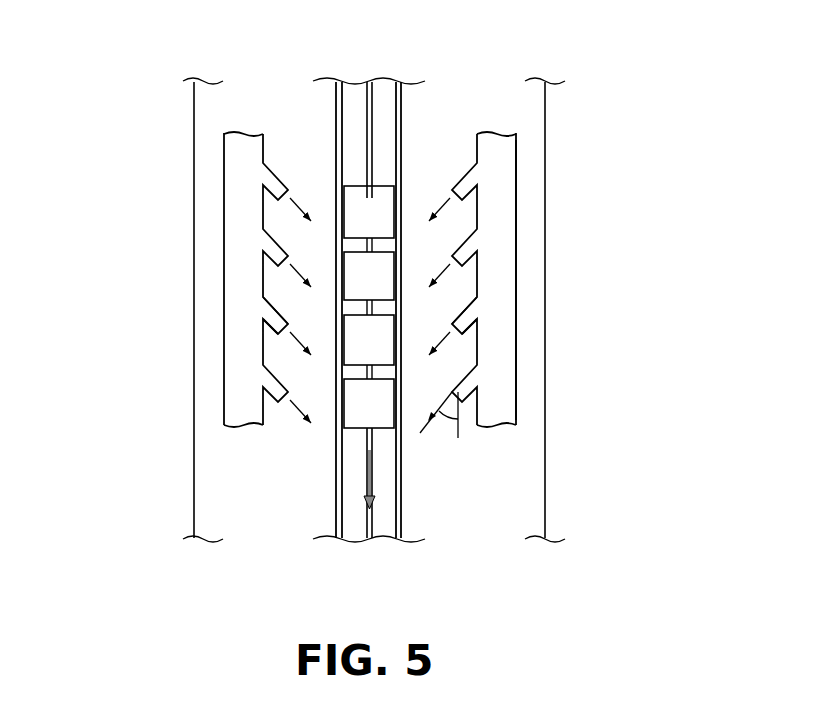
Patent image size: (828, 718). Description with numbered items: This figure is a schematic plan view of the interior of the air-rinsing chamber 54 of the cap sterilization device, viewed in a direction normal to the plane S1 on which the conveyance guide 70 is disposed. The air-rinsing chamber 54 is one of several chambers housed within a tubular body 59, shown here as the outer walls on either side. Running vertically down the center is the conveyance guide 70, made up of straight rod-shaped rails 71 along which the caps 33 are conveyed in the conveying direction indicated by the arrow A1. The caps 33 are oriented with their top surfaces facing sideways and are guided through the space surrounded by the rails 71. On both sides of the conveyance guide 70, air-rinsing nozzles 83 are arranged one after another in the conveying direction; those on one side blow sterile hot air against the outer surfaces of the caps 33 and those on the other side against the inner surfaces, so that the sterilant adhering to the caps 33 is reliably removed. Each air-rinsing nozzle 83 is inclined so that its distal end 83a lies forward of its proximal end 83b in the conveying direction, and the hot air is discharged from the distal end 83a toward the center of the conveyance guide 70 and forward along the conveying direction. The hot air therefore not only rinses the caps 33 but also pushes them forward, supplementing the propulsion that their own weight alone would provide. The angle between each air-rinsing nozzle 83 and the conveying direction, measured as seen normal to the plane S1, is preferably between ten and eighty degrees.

The rail 71 is at (400, 82).
The conveyance guide 70 is at (412, 101).
The tubular body 59 is at (548, 118).
The air-rinsing chamber 54 is at (530, 282).
The air-rinsing nozzle 83 is at (277, 252).
The distal end 83a is at (272, 346).
The proximal end 83b is at (265, 312).
The cap 33 is at (382, 277).
The arrow indicating conveying direction A1 is at (372, 482).
The plane S1 is at (528, 516).